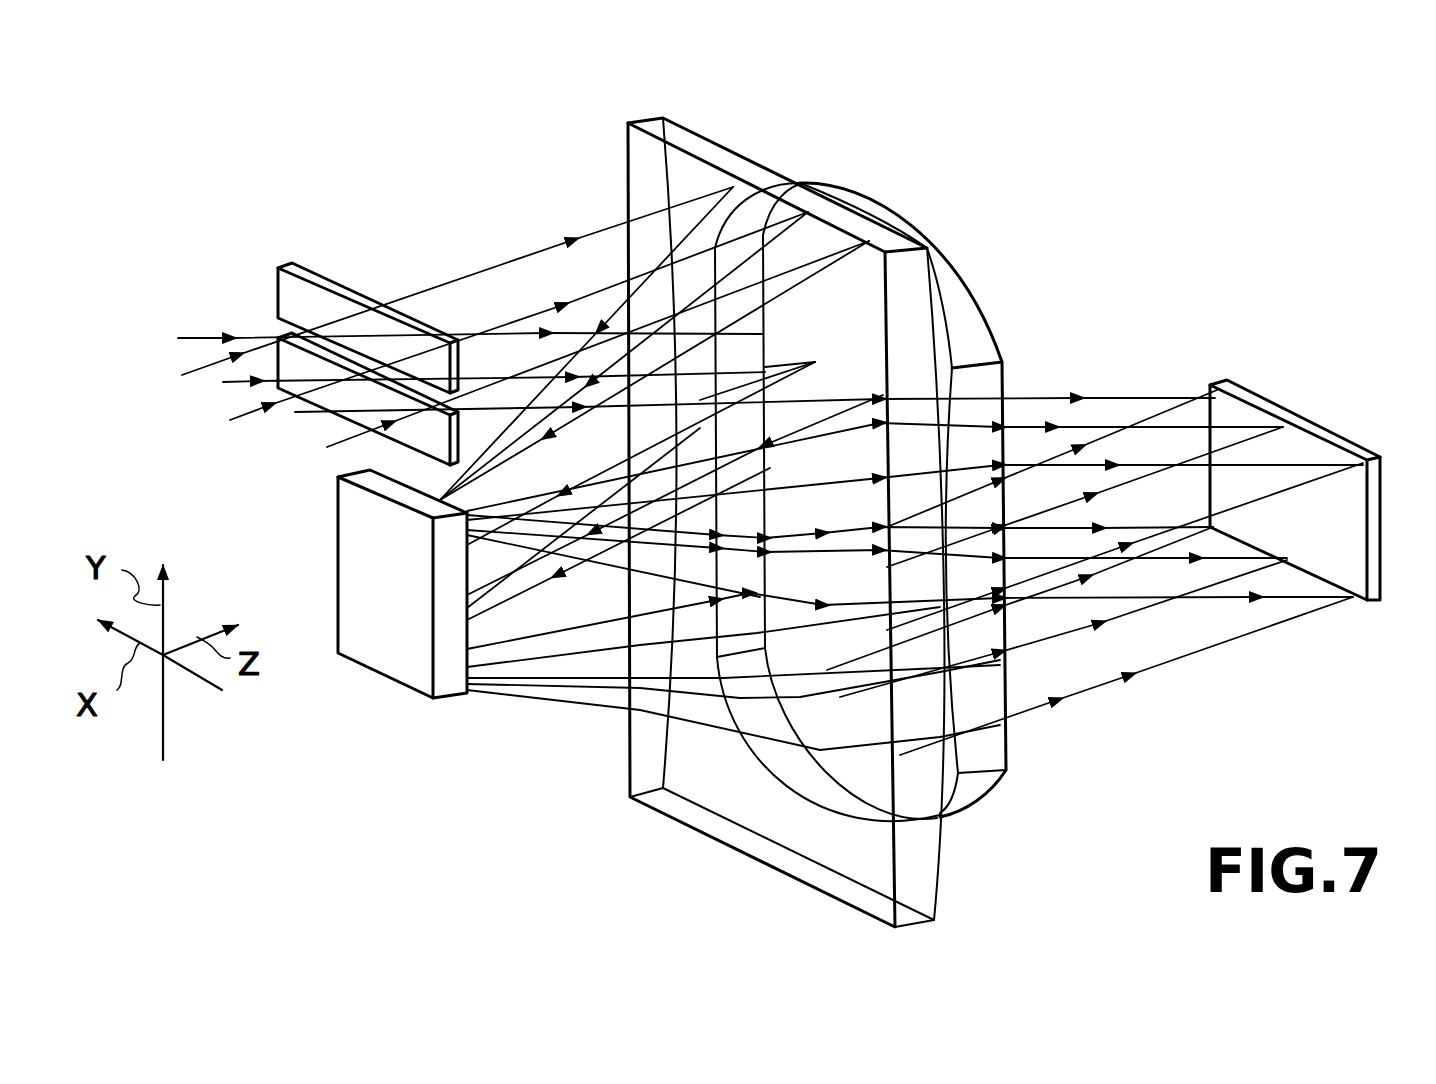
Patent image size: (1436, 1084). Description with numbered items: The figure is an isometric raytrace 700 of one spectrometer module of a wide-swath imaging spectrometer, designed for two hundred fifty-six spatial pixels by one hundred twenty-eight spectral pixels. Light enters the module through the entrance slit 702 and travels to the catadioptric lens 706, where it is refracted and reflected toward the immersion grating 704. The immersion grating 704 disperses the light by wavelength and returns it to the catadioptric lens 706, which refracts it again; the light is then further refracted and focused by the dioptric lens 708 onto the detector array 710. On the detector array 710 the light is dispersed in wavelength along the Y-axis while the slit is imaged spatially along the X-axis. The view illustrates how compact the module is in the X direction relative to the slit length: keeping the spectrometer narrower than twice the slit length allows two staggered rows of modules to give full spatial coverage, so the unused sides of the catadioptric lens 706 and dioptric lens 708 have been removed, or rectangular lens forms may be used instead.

The raytrace 700 is at (1195, 295).
The entrance slit 702 is at (340, 283).
The immersion grating 704 is at (407, 663).
The catadioptric lens 706 is at (728, 145).
The dioptric lens 708 is at (977, 287).
The detector array 710 is at (1338, 426).